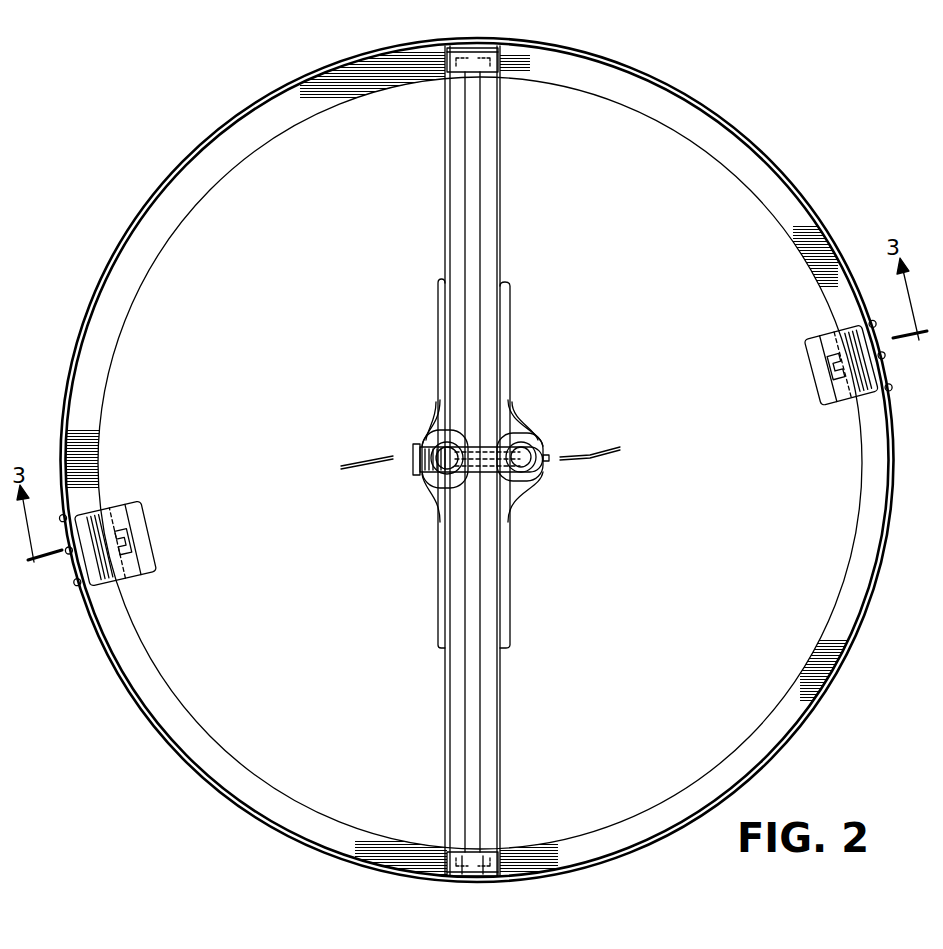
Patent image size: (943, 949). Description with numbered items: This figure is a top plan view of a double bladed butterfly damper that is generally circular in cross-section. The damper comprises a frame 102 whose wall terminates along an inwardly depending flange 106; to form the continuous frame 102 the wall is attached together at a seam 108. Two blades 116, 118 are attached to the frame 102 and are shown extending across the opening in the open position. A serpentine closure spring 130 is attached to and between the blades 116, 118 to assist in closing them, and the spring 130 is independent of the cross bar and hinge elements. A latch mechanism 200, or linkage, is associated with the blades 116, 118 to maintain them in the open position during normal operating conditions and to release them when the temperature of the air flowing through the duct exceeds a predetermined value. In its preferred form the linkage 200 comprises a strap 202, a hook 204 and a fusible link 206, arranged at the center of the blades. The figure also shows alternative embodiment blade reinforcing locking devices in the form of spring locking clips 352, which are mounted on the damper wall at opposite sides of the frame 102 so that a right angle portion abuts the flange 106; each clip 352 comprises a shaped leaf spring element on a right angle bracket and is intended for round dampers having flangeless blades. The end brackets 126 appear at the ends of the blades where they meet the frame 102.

The frame 102 is at (680, 90).
The inwardly depending flange 106 is at (612, 86).
The seam 108 is at (470, 876).
The blade 116 is at (500, 160).
The blade 118 is at (446, 148).
The blade end mounting brackets 126 is at (468, 46).
The serpentine closure spring 130 is at (509, 360).
The latch mechanism 200 is at (525, 483).
The strap 202 is at (483, 468).
The hook 204 is at (436, 436).
The fusible link 206 is at (524, 437).
The spring locking clip 352 is at (829, 398).